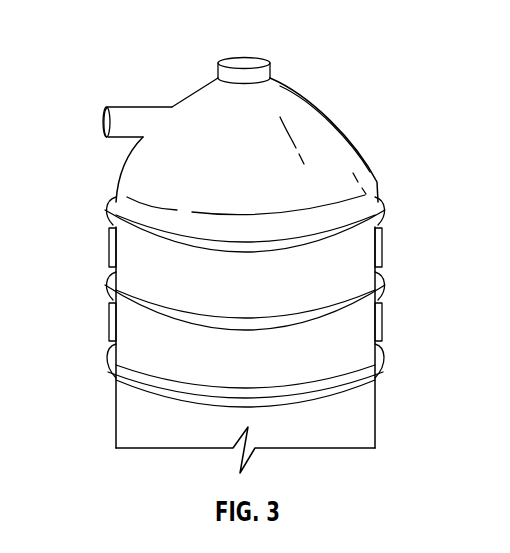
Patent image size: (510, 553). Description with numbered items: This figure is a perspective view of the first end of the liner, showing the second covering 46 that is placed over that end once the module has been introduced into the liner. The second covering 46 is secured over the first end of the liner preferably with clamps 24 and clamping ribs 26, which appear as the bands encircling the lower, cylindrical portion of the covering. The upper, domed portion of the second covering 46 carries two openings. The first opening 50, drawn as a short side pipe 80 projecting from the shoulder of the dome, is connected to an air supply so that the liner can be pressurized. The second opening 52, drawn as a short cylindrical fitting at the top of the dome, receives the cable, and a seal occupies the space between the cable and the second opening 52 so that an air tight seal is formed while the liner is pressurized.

The second covering 46 is at (340, 99).
The second opening 52 is at (247, 62).
The side pipe 80 is at (133, 116).
The first opening 50 is at (107, 127).
The clamps 24 is at (383, 243).
The clamping ribs 26 is at (388, 358).